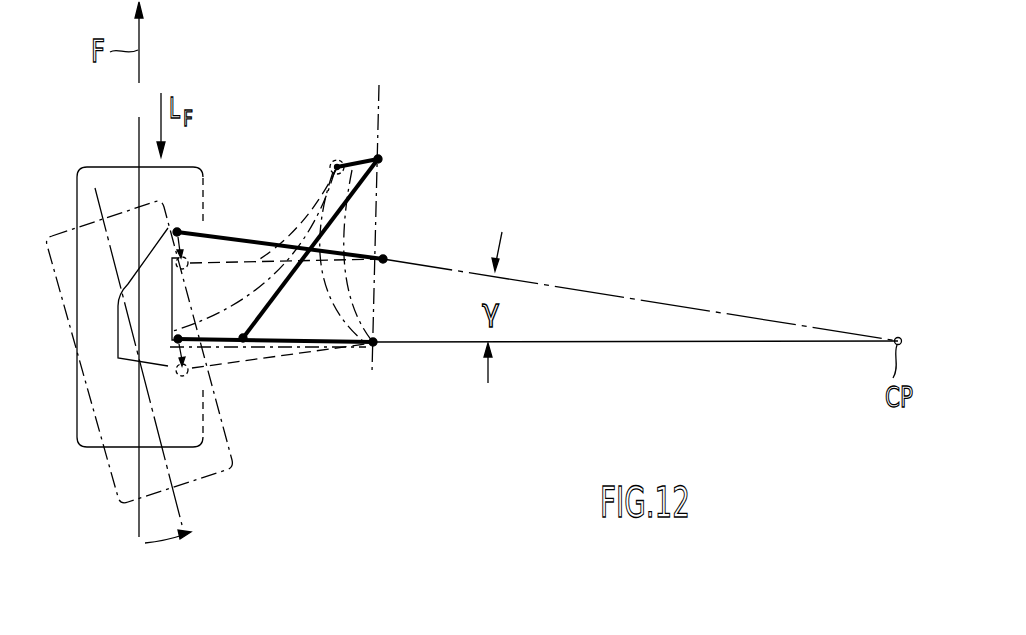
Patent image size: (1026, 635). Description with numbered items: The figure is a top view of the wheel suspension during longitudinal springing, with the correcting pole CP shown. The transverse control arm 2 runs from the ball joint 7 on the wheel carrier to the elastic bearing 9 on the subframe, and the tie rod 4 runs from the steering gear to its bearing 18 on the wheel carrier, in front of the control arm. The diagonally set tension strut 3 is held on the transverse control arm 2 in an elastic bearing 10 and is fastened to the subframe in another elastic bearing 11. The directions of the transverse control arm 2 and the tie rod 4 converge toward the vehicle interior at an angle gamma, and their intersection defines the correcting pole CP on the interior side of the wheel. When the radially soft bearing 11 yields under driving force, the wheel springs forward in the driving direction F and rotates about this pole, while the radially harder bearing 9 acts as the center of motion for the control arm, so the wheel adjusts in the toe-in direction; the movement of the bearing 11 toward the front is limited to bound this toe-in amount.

The transverse control arm 2 is at (303, 348).
The tension strut 3 is at (262, 302).
The tie rod 4 is at (238, 237).
The ball joint 7 is at (169, 350).
The elastic bearing 9 is at (377, 346).
The elastic bearing 10 is at (243, 343).
The elastic bearing 11 is at (381, 157).
The bearing 18 is at (179, 230).